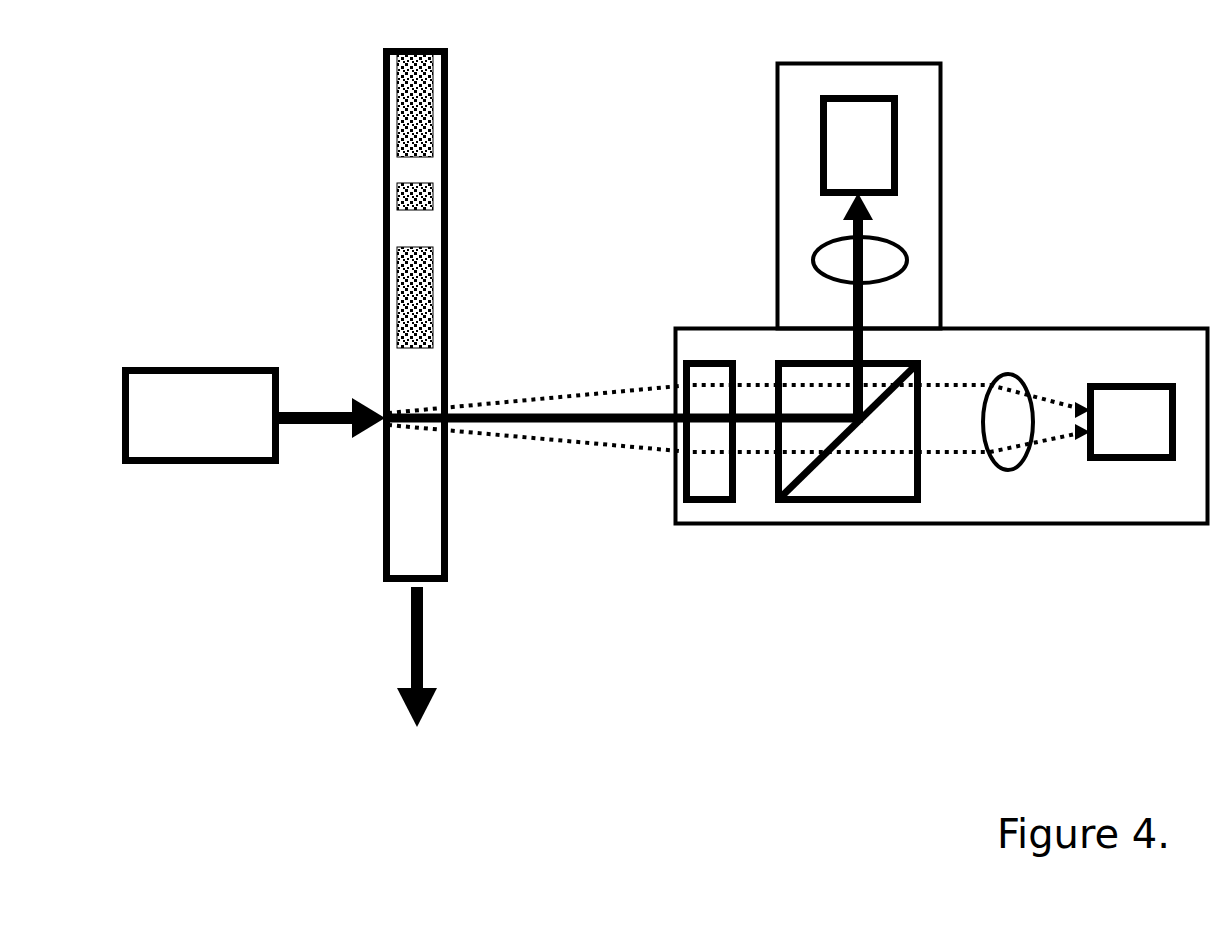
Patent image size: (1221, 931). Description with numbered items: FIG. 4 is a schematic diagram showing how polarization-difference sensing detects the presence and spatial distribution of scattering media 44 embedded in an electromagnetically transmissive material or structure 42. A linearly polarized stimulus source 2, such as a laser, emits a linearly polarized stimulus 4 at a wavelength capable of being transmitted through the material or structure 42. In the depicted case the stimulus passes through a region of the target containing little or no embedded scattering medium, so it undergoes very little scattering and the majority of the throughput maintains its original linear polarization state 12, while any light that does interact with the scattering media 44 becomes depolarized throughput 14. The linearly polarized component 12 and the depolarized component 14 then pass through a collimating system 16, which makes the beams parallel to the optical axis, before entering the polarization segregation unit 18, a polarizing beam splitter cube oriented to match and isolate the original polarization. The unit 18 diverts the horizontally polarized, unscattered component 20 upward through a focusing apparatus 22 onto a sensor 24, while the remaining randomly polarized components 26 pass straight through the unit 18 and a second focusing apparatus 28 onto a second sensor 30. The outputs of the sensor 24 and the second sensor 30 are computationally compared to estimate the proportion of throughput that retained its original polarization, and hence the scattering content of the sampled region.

The linearly polarized stimulus source 2 is at (180, 417).
The linearly polarized stimulus 4 is at (327, 425).
The horizontally polarized throughput 12 is at (643, 415).
The scattered randomly polarized throughput 14 is at (572, 440).
The collimating system 16 is at (708, 475).
The polarization segregation unit 18 is at (847, 475).
The horizontally linearly polarized and unscattered component 20 is at (853, 315).
The focusing apparatus 22 is at (882, 260).
The sensor 24 is at (858, 147).
The random polarization components 26 is at (950, 453).
The focusing apparatus 28 is at (1008, 422).
The second sensor 30 is at (1125, 422).
The electromagnetically transmissive material or structure 42 is at (408, 473).
The scattering media 44 is at (410, 292).